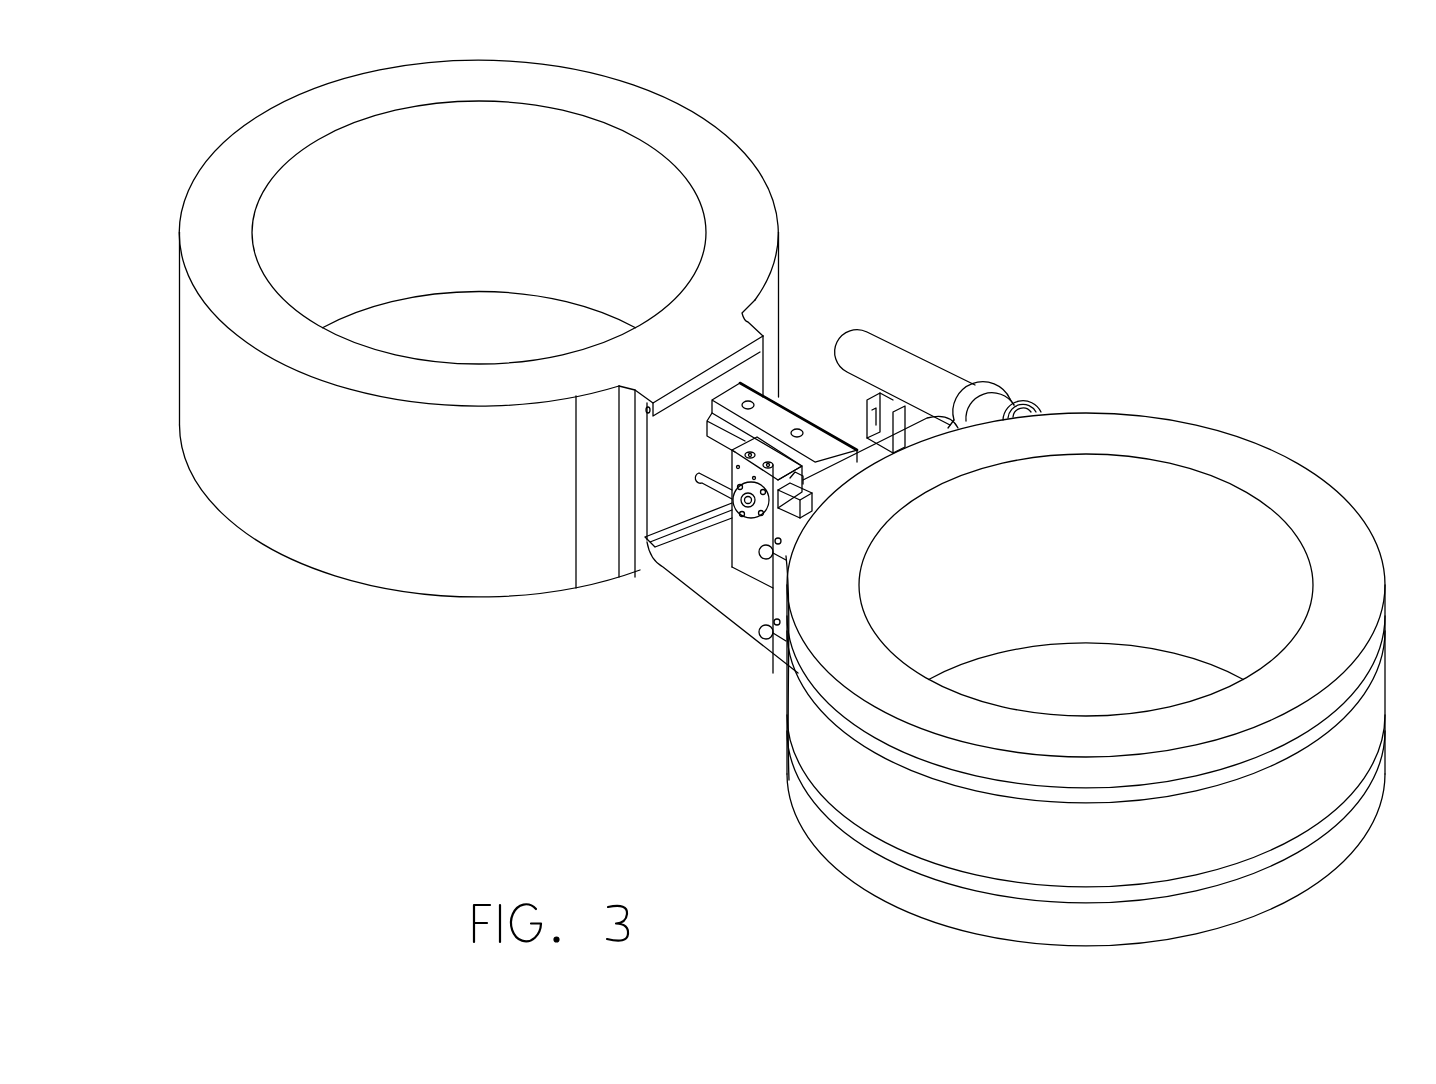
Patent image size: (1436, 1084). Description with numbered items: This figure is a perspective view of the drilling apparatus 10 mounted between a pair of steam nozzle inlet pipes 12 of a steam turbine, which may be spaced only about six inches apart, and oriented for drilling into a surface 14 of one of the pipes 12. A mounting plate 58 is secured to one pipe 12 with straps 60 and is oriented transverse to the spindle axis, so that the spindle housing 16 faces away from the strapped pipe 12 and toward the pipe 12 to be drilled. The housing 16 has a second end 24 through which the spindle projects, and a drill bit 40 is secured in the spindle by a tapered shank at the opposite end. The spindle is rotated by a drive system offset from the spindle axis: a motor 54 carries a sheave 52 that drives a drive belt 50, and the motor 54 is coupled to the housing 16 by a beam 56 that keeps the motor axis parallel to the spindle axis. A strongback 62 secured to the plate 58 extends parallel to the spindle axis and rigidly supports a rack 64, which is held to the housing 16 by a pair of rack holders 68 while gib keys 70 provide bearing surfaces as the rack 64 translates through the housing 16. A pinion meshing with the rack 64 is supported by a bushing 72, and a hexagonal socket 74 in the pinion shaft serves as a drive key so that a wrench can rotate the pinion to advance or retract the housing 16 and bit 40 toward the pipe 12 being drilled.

The drilling apparatus 10 is at (801, 326).
The steam nozzle inlet pipe 12 is at (257, 148).
The surface 14 is at (652, 502).
The spindle housing 16 is at (763, 573).
The second end 24 is at (813, 508).
The drill bit 40 is at (697, 493).
The drive belt 50 is at (993, 382).
The sheave 52 is at (1018, 398).
The motor 54 is at (905, 358).
The beam 56 is at (863, 423).
The mounting plate 58 is at (803, 517).
The straps 60 is at (913, 763).
The strongback 62 is at (790, 402).
The rack 64 is at (710, 435).
The rack holders 68 is at (762, 453).
The gib keys 70 is at (812, 476).
The bushing 72 is at (765, 525).
The hexagonal socket 74 is at (748, 505).